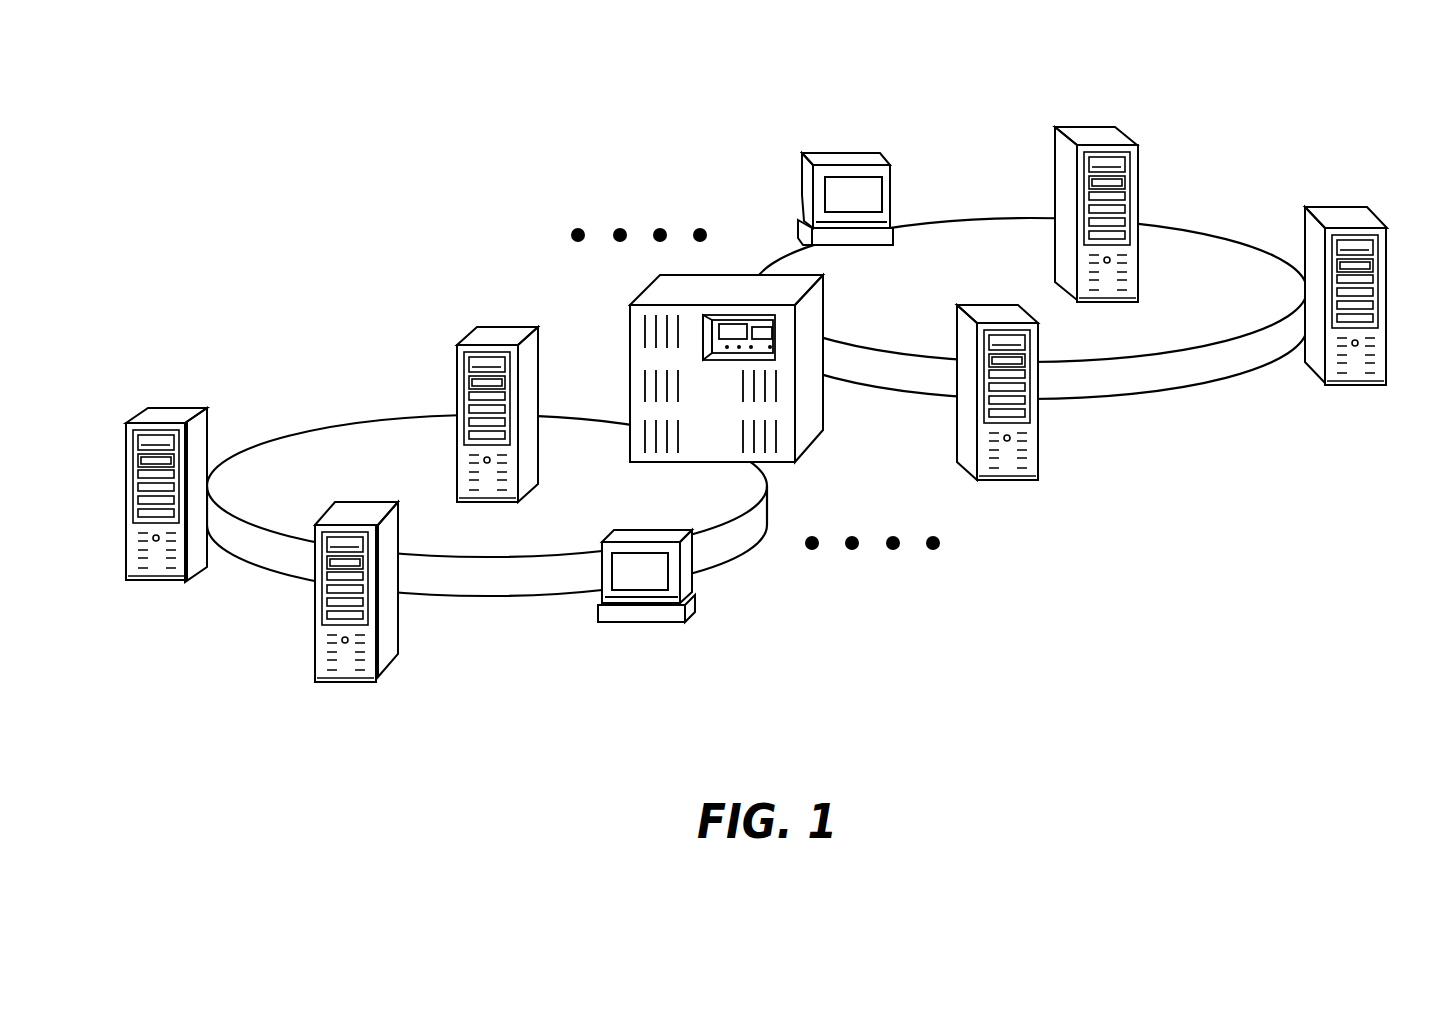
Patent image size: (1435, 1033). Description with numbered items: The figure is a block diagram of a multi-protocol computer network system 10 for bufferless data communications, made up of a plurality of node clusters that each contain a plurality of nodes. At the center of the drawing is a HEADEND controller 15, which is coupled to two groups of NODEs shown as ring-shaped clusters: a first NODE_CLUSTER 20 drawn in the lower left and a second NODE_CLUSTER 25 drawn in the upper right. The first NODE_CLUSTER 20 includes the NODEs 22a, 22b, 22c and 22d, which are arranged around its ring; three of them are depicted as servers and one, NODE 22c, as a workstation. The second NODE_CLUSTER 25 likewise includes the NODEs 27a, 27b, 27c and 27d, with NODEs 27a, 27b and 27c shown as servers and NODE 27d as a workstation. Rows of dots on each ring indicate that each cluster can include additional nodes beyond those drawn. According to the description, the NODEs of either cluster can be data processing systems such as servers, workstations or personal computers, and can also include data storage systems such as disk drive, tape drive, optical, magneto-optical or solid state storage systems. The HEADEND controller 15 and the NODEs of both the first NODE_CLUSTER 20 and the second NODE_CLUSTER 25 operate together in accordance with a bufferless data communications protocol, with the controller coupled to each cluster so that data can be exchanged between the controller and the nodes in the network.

The system 10 is at (767, 397).
The HEADEND controller 15 is at (668, 290).
The first NODE_CLUSTER 20 is at (308, 370).
The NODE 22a is at (174, 413).
The NODE 22b is at (392, 650).
The NODE 22c is at (687, 603).
The NODE 22d is at (512, 333).
The second NODE_CLUSTER 25 is at (1250, 185).
The NODE 27a is at (1040, 460).
The NODE 27b is at (1345, 215).
The NODE 27c is at (1090, 132).
The NODE 27d is at (833, 162).